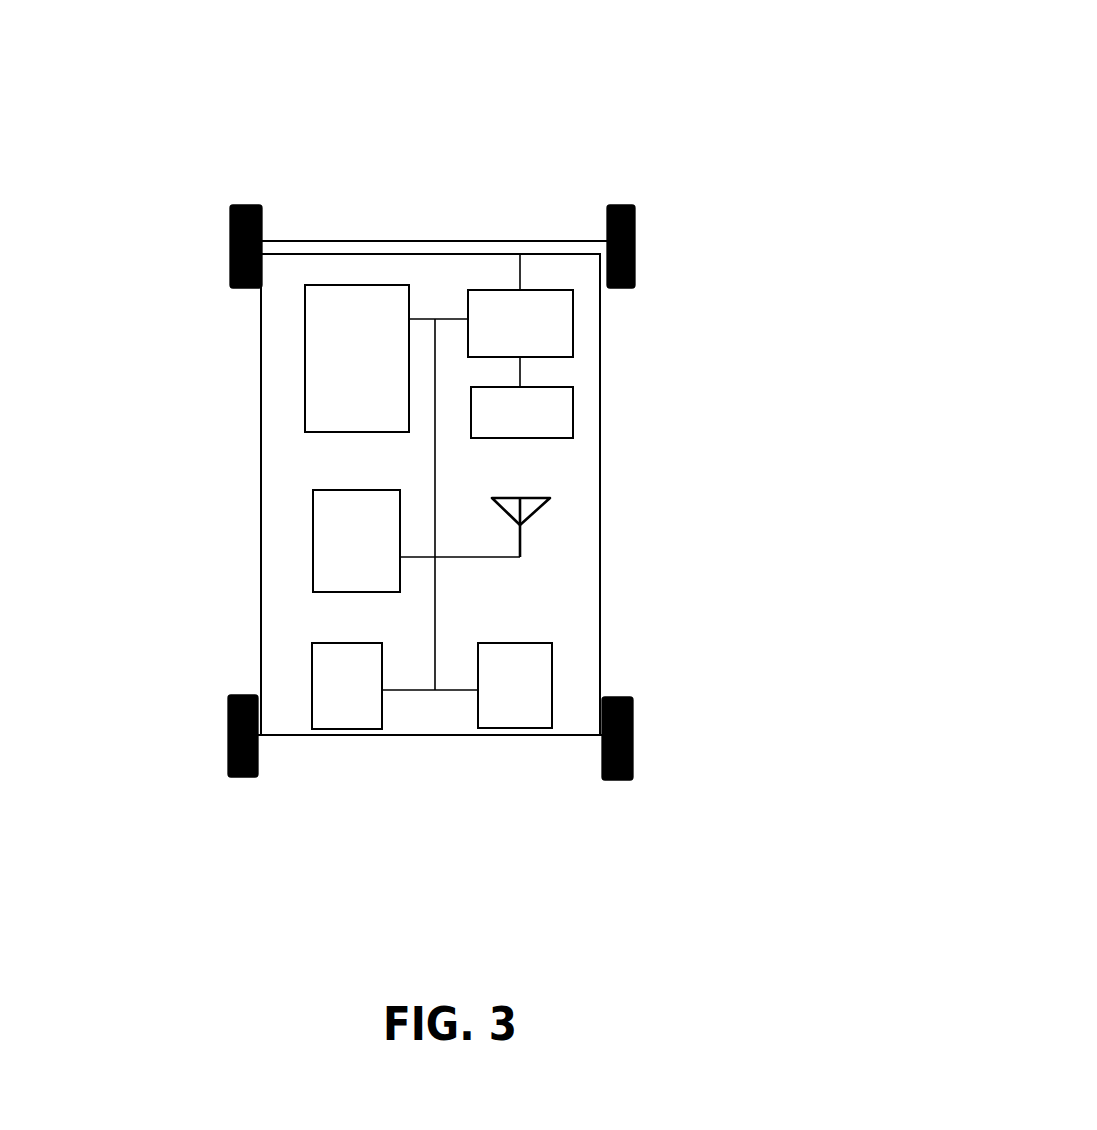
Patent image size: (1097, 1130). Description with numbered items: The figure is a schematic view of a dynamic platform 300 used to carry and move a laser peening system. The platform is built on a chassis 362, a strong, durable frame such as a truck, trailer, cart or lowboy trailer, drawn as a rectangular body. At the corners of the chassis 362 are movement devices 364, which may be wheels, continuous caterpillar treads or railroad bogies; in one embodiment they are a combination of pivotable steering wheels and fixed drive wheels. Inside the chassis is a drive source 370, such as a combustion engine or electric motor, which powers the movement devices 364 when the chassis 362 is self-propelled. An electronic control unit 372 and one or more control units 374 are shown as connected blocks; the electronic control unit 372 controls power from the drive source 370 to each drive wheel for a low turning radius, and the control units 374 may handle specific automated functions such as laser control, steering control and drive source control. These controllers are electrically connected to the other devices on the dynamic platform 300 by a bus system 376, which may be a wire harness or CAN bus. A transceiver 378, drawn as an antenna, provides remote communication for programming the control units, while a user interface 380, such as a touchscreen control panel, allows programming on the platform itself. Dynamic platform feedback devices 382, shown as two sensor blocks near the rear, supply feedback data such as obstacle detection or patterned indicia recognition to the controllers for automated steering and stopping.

The dynamic platform 300 is at (734, 81).
The chassis 362 is at (598, 597).
The movement devices 364 is at (636, 248).
The drive source 370 is at (305, 358).
The electronic control unit 372 is at (573, 328).
The control units 374 is at (573, 417).
The bus system 376 is at (435, 633).
The transceiver 378 is at (520, 547).
The user interface 380 is at (313, 558).
The dynamic platform feedback devices 382 is at (510, 728).